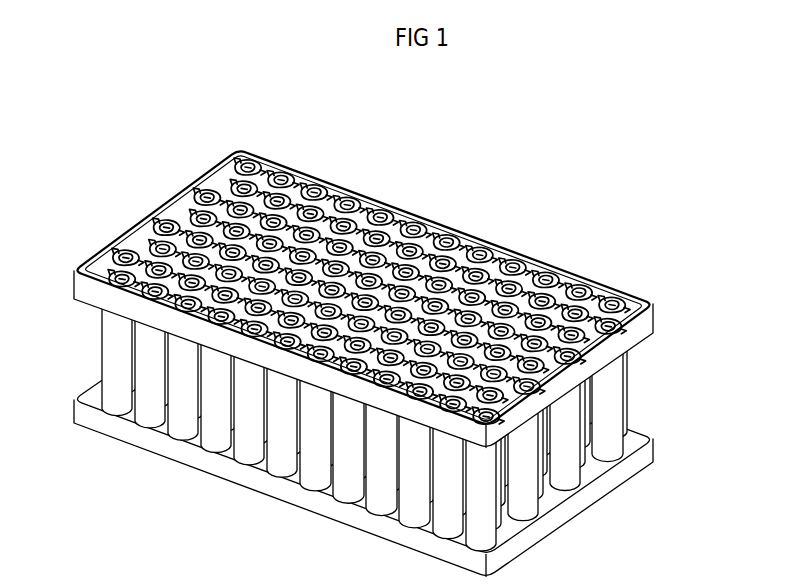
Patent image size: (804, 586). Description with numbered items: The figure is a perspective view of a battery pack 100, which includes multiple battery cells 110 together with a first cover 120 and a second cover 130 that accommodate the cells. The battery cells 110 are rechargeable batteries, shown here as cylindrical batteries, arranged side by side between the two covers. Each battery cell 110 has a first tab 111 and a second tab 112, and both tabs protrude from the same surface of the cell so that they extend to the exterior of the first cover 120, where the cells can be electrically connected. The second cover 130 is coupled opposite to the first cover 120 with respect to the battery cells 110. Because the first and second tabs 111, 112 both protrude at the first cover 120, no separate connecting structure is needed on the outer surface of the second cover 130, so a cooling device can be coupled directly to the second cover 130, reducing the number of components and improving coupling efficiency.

The battery pack 100 is at (743, 95).
The battery cell 110 is at (608, 400).
The first tab 111 is at (238, 152).
The second tab 112 is at (263, 167).
The first cover 120 is at (633, 308).
The second cover 130 is at (618, 478).